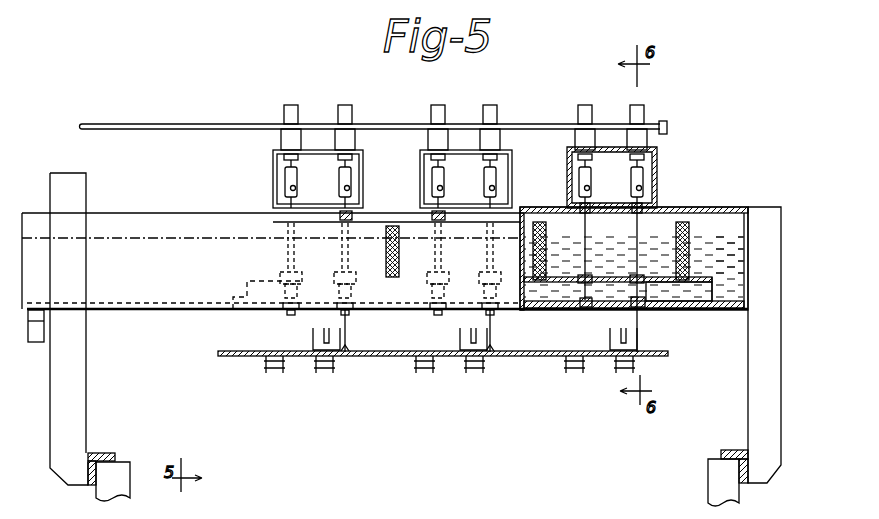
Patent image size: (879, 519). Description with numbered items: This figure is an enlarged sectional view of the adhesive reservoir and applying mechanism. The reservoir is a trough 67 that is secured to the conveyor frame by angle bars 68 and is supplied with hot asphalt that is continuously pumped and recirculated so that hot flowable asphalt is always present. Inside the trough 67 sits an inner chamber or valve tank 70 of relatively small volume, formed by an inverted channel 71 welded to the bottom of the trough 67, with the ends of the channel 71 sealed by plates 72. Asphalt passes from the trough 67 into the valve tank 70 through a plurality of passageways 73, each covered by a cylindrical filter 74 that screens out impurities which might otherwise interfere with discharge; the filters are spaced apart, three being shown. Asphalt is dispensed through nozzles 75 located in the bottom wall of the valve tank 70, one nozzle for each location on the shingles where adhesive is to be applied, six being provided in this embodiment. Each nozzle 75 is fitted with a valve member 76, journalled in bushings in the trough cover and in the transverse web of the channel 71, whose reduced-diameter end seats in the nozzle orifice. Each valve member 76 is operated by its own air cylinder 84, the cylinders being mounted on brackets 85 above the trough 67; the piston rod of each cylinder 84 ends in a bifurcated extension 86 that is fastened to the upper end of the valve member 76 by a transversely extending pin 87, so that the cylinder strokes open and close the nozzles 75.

The trough 67 is at (701, 194).
The angle bars 68 is at (58, 396).
The valve tank 70 is at (688, 297).
The inverted channel 71 is at (662, 285).
The plates 72 is at (714, 288).
The passageways 73 is at (534, 277).
The cylindrical filter 74 is at (546, 225).
The nozzles 75 is at (290, 312).
The valve member 76 is at (293, 203).
The air cylinder 84 is at (432, 98).
The brackets 85 is at (273, 156).
The bifurcated extension 86 is at (286, 186).
The transversely extending pin 87 is at (294, 184).